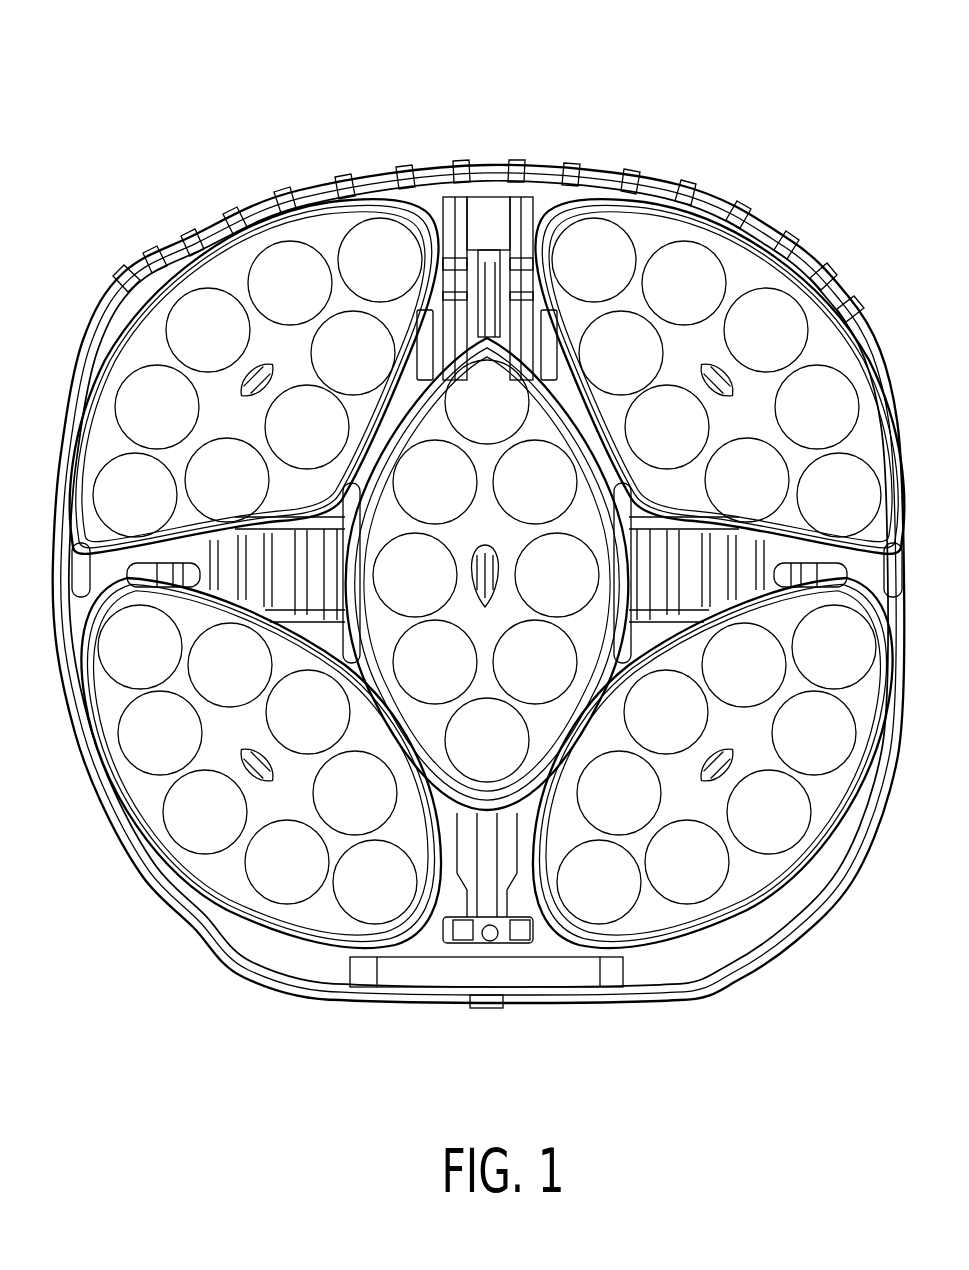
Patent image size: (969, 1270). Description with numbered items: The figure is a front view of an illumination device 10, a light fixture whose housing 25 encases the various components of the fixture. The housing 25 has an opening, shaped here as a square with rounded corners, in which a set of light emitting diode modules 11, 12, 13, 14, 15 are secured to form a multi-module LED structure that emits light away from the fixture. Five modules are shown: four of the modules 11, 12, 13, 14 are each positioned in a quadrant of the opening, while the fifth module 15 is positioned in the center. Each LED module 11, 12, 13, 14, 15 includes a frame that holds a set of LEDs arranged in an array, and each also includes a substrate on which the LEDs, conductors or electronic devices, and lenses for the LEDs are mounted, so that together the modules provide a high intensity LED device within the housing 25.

The illumination device 10 is at (463, 533).
The LED module 11 is at (226, 318).
The LED module 12 is at (747, 276).
The LED module 13 is at (817, 791).
The LED module 14 is at (150, 781).
The LED module 15 is at (500, 840).
The housing 25 is at (65, 687).